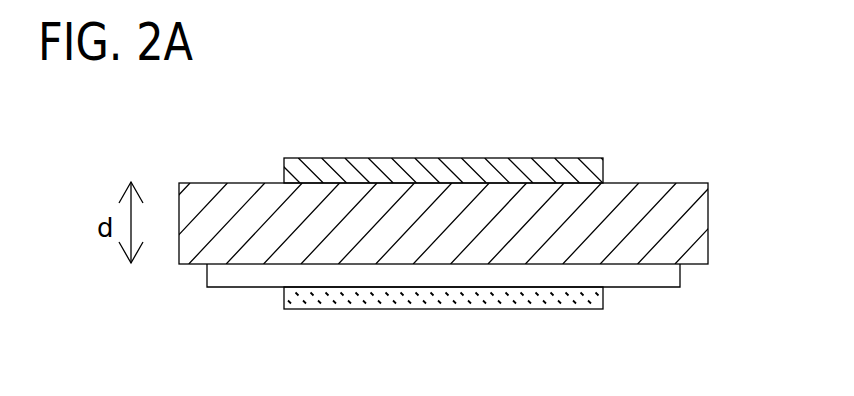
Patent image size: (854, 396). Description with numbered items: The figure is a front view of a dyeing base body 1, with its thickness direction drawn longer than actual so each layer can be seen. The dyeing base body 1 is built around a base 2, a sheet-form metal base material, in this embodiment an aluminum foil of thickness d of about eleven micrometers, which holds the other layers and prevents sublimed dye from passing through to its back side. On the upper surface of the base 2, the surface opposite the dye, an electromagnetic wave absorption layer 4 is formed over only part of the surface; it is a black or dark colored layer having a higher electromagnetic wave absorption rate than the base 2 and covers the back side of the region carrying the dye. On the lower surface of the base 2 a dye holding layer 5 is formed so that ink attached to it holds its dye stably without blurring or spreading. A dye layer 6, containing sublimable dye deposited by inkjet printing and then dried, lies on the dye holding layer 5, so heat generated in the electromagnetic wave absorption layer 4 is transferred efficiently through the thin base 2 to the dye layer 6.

The dyeing base body 1 is at (685, 167).
The base 2 is at (235, 195).
The electromagnetic wave absorption layer 4 is at (435, 172).
The dye holding layer 5 is at (244, 277).
The dye layer 6 is at (438, 307).